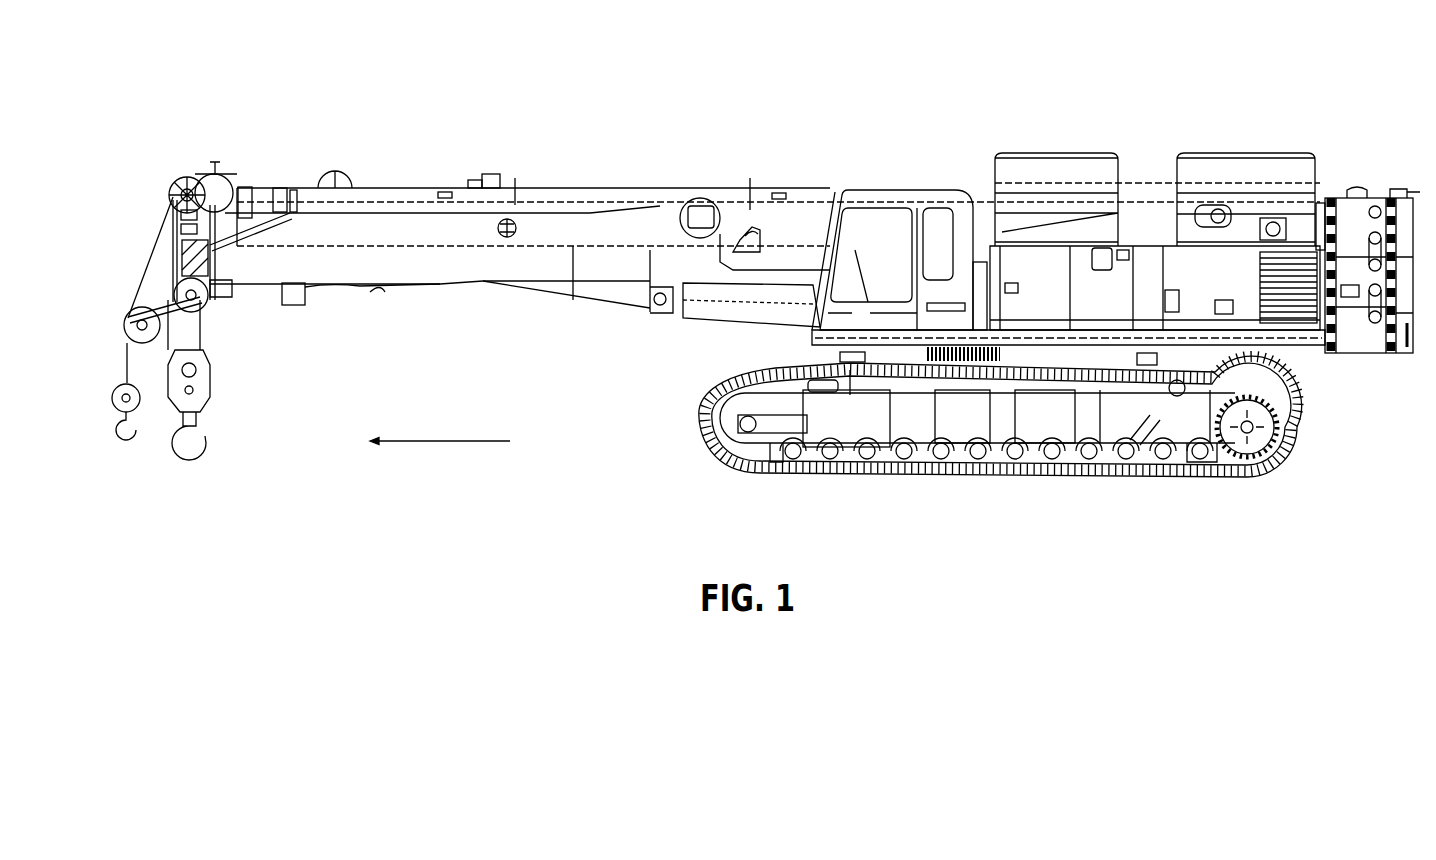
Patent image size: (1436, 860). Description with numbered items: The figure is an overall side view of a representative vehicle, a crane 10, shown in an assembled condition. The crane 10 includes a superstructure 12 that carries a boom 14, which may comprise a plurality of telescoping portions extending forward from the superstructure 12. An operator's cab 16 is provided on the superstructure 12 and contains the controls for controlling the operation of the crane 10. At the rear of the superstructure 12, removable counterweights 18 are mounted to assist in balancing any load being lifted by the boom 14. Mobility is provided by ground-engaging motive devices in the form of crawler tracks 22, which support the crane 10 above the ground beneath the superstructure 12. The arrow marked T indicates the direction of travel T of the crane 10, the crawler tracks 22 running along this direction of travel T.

The crane 10 is at (864, 112).
The superstructure 12 is at (1255, 110).
The boom 14 is at (447, 275).
The operator's cab 16 is at (957, 193).
The removable counterweights 18 is at (1363, 355).
The crawler tracks 22 is at (672, 417).
The direction of travel T is at (462, 441).